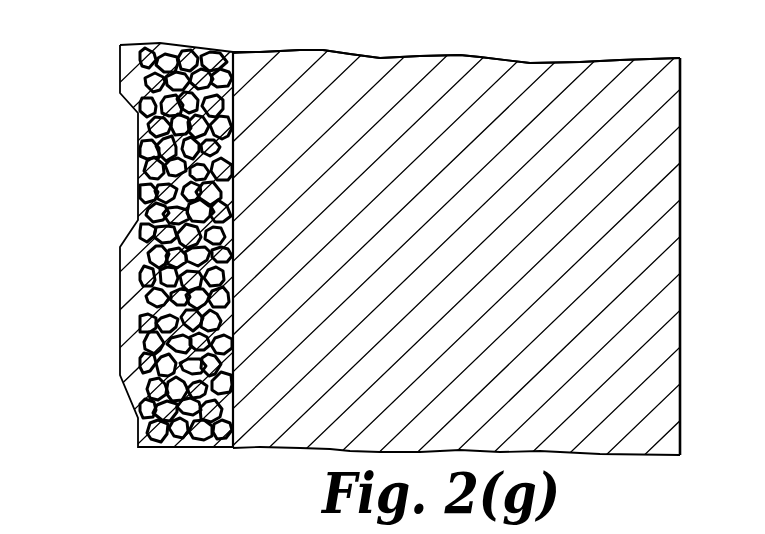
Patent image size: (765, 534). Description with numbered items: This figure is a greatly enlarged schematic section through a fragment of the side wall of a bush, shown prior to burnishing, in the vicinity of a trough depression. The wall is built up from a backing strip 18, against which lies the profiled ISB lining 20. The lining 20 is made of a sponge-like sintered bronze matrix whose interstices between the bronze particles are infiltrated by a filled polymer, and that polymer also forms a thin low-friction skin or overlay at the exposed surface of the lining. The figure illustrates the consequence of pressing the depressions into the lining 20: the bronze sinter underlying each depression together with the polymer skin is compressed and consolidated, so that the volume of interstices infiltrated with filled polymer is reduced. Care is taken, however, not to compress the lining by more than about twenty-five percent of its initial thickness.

The backing strip 18 is at (447, 260).
The ISB lining 20 is at (135, 291).